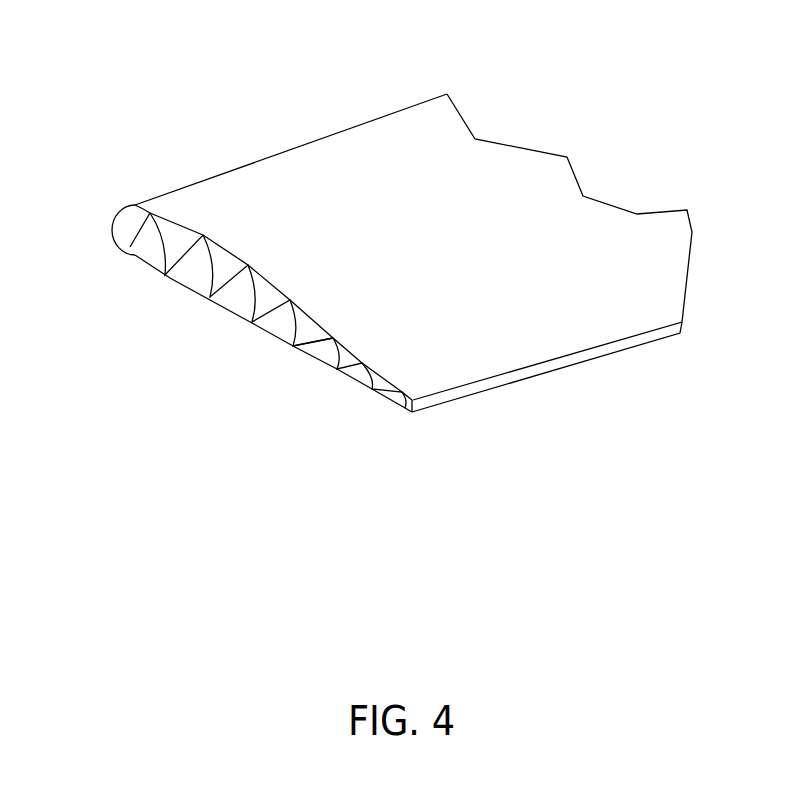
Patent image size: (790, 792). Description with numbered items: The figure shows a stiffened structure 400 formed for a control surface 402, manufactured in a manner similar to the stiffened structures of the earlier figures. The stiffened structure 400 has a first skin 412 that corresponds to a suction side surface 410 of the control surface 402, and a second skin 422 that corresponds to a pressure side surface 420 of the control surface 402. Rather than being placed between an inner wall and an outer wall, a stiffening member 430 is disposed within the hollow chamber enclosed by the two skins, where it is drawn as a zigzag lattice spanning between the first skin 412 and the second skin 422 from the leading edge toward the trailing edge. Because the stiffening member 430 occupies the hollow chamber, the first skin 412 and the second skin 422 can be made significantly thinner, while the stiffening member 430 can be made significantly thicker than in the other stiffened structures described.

The stiffened structure 400 is at (165, 70).
The control surface 402 is at (423, 263).
The suction side surface 410 is at (335, 168).
The first skin 412 is at (253, 197).
The pressure side surface 420 is at (230, 315).
The second skin 422 is at (320, 365).
The stiffening member 430 is at (141, 260).